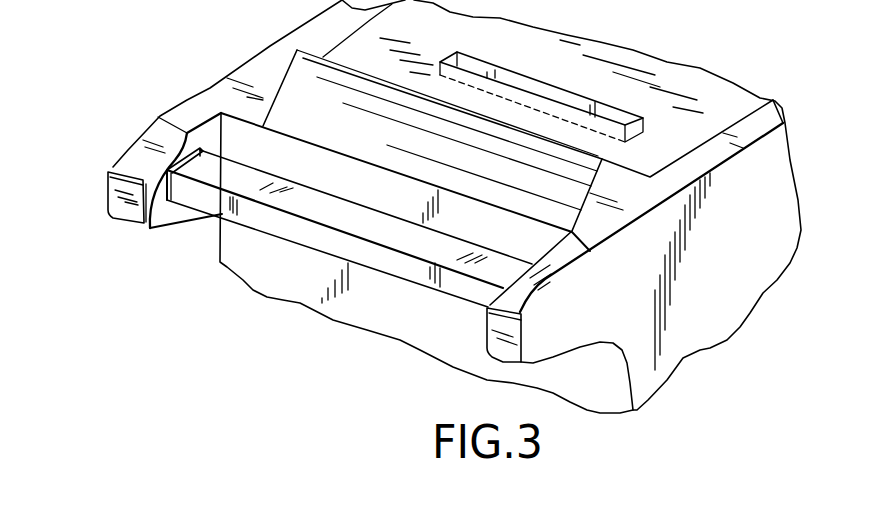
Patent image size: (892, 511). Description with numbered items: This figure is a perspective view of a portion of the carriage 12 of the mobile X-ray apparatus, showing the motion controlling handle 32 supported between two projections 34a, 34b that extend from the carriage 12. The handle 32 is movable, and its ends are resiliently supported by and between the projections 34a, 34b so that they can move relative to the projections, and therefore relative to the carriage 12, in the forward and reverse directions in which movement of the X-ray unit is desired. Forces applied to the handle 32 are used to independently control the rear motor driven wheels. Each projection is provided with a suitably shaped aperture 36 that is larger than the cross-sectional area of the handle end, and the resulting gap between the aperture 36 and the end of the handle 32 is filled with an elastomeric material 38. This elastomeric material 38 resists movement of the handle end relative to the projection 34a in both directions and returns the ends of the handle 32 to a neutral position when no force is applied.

The carriage 12 is at (698, 348).
The movable handle 32 is at (307, 207).
The projection 34a is at (108, 172).
The projection 34b is at (550, 349).
The aperture 36 is at (150, 229).
The elastomeric material 38 is at (198, 148).